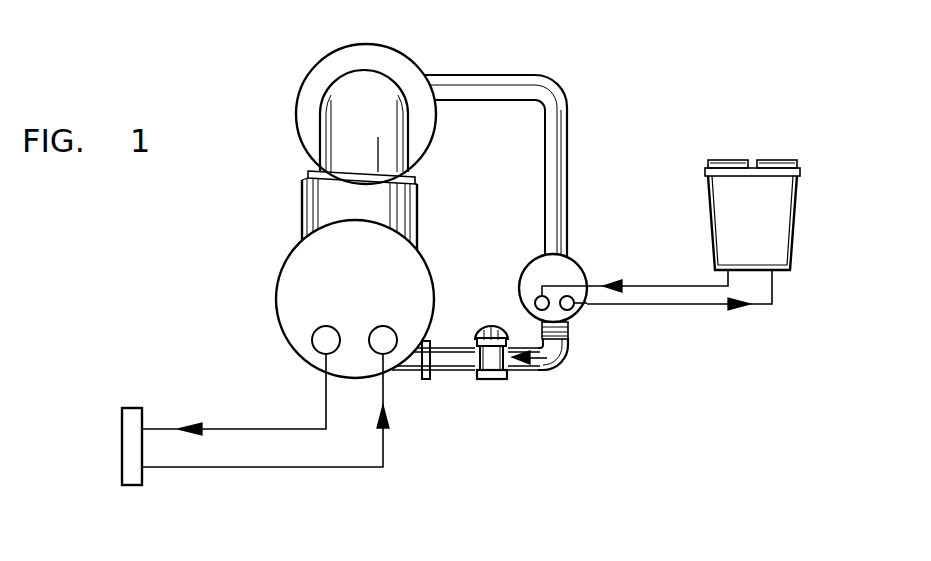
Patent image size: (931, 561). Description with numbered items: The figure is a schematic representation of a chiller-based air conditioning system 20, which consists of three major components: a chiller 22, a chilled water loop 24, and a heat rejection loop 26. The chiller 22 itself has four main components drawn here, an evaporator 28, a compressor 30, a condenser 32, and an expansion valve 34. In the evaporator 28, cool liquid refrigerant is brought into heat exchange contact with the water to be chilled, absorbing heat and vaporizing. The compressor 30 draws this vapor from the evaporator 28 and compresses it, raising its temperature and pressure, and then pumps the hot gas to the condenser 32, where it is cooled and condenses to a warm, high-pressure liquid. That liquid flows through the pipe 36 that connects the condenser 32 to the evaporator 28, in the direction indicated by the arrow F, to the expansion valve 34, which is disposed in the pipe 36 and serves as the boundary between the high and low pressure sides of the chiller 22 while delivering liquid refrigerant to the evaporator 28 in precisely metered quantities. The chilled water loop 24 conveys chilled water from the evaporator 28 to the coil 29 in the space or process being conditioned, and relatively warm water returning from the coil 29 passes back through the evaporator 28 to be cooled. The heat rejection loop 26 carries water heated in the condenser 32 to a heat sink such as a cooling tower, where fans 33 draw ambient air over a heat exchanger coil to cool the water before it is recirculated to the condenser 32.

The air conditioning system 20 is at (294, 88).
The chiller 22 is at (298, 208).
The chilled water loop 24 is at (243, 467).
The heat rejection loop 26 is at (768, 228).
The evaporator 28 is at (371, 289).
The coil 29 is at (127, 443).
The compressor 30 is at (383, 129).
The condenser 32 is at (563, 272).
The fans 33 is at (770, 160).
The expansion valve 34 is at (493, 383).
The pipe 36 is at (537, 372).
The arrow indicating refrigerant flow direction F is at (568, 353).